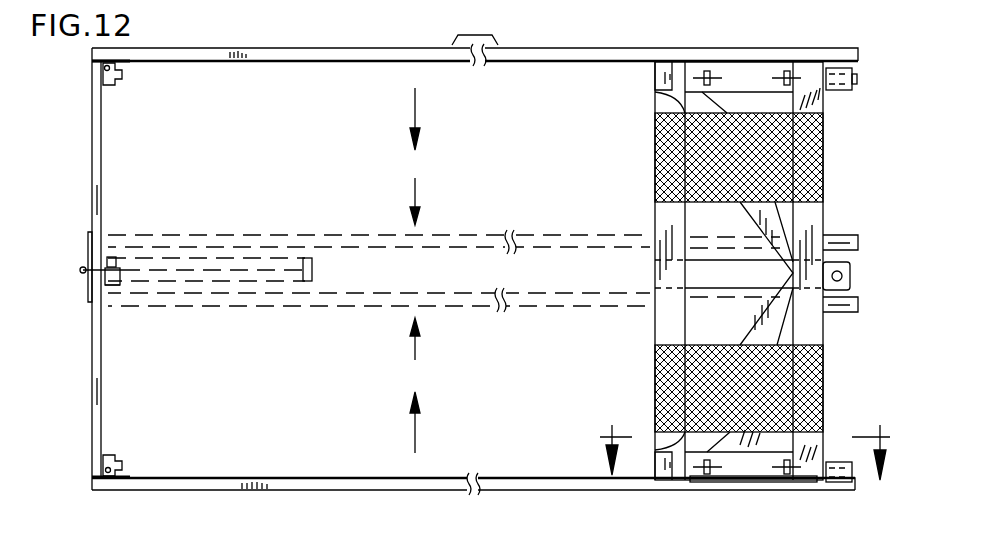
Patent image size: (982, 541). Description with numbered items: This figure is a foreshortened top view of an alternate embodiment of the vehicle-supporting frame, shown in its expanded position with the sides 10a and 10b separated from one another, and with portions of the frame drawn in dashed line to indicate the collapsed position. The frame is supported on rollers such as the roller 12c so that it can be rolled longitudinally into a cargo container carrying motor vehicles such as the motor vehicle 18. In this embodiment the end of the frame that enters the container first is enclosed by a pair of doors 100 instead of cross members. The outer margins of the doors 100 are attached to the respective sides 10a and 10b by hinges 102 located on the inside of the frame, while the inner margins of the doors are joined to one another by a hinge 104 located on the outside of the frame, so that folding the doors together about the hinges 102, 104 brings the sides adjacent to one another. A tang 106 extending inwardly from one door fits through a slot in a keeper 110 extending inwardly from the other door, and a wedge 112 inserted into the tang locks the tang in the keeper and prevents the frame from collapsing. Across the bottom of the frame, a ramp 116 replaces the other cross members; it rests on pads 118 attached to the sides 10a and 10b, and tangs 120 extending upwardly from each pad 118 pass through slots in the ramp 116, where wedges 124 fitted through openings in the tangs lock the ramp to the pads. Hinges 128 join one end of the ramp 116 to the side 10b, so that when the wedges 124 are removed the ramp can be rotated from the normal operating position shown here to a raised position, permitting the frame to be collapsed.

The side 10a is at (537, 50).
The side 10b is at (543, 493).
The roller 12c is at (858, 476).
The motor vehicle 18 is at (745, 446).
The door 100 is at (92, 182).
The hinge 102 is at (106, 85).
The hinge 104 is at (81, 269).
The tang 106 is at (113, 287).
The keeper 110 is at (113, 268).
The wedge 112 is at (106, 256).
The ramp 116 is at (755, 91).
The pad 118 is at (655, 77).
The tang 120 is at (702, 75).
The wedge 124 is at (725, 71).
The hinge 128 is at (740, 484).